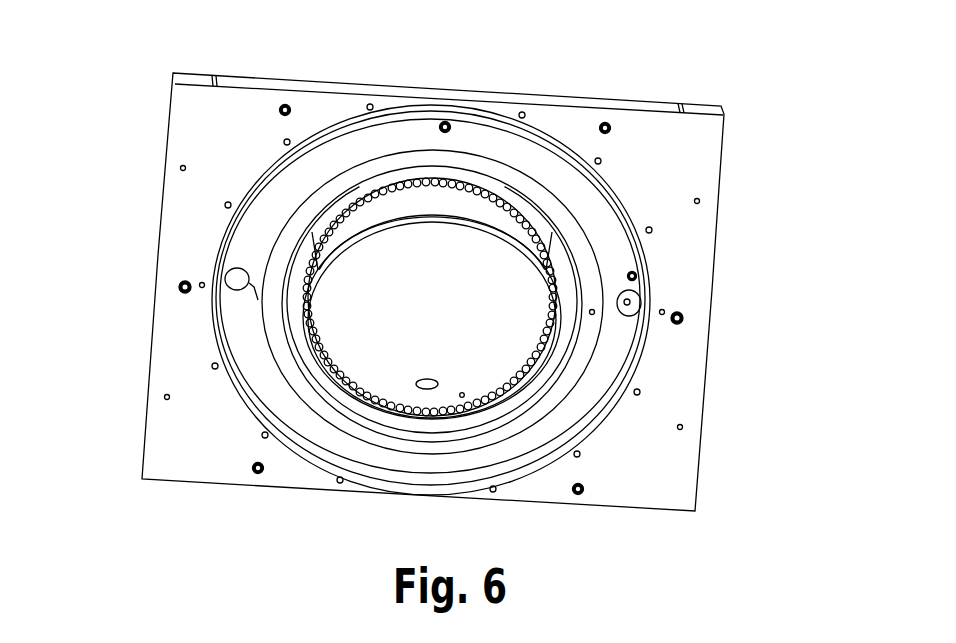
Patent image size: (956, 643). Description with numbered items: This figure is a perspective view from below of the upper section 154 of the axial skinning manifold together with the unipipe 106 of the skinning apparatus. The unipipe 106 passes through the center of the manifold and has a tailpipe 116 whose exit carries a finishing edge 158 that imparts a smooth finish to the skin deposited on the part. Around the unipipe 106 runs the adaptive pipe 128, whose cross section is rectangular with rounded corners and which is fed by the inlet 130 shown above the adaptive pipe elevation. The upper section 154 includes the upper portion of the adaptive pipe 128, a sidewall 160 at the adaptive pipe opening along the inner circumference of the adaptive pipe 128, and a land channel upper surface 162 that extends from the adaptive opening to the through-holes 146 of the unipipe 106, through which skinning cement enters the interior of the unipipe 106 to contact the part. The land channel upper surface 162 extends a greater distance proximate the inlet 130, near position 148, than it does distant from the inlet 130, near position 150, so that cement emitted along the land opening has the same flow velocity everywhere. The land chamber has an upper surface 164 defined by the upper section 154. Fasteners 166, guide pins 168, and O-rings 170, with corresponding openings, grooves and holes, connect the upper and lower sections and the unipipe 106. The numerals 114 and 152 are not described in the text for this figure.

The unipipe 106 is at (493, 368).
The bore cavity 114 is at (483, 303).
The tailpipe 116 is at (548, 279).
The adaptive pipe 128 is at (505, 458).
The inlet 130 is at (632, 302).
The through-holes 146 is at (498, 212).
The position proximate inlet 148 is at (593, 316).
The position distant from inlet 150 is at (450, 162).
The inner rim 152 is at (327, 388).
The upper section 154 is at (716, 105).
The finishing edge 158 is at (350, 422).
The sidewall 160 is at (285, 378).
The land channel upper surface 162 is at (285, 247).
The upper surface of land chamber 164 is at (565, 252).
The fasteners 166 is at (179, 288).
The guide pins 168 is at (285, 107).
The O-rings 170 is at (213, 326).